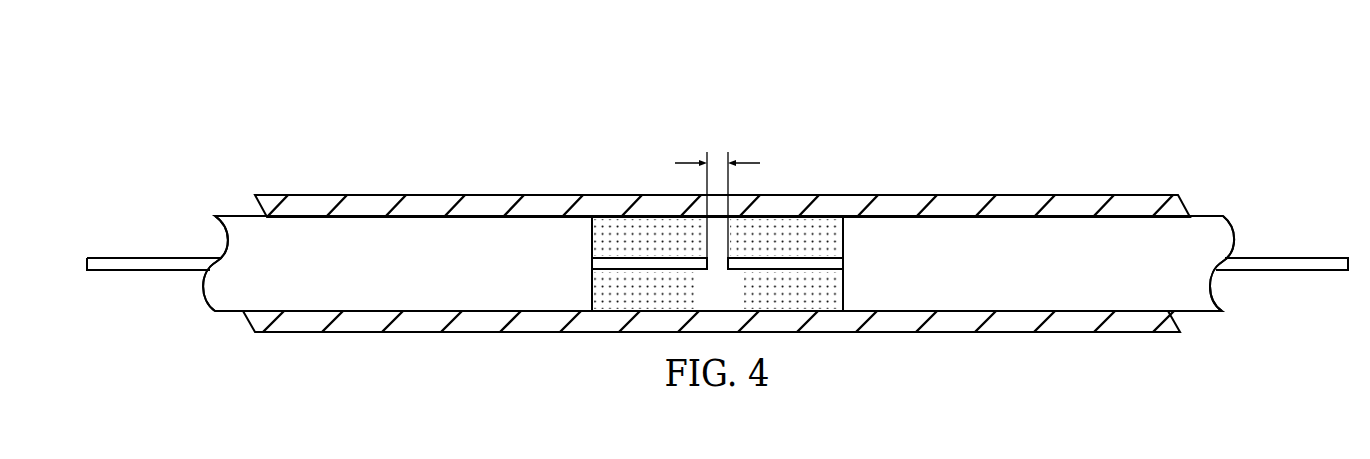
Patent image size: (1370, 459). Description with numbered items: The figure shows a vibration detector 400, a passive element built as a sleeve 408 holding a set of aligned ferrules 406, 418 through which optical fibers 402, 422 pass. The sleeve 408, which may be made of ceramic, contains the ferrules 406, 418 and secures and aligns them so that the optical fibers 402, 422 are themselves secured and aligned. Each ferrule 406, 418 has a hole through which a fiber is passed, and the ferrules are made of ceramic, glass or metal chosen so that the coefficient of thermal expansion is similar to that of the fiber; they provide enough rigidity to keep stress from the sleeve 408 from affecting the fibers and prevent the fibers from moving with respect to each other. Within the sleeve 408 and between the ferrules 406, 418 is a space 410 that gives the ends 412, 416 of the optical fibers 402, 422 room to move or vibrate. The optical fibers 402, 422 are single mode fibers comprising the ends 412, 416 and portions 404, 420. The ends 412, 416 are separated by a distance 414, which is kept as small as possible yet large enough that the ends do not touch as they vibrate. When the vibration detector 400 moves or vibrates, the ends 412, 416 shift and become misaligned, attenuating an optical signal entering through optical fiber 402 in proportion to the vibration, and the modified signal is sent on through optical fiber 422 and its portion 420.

The vibration detector 400 is at (826, 116).
The optical fiber 402 is at (107, 250).
The portion 404 is at (177, 258).
The ferrule 406 is at (197, 289).
The sleeve 408 is at (367, 202).
The space 410 is at (738, 302).
The end 412 is at (650, 258).
The distance 414 is at (687, 163).
The end 416 is at (773, 258).
The ferrule 418 is at (1243, 237).
The portion 420 is at (1262, 272).
The optical fiber 422 is at (1328, 282).